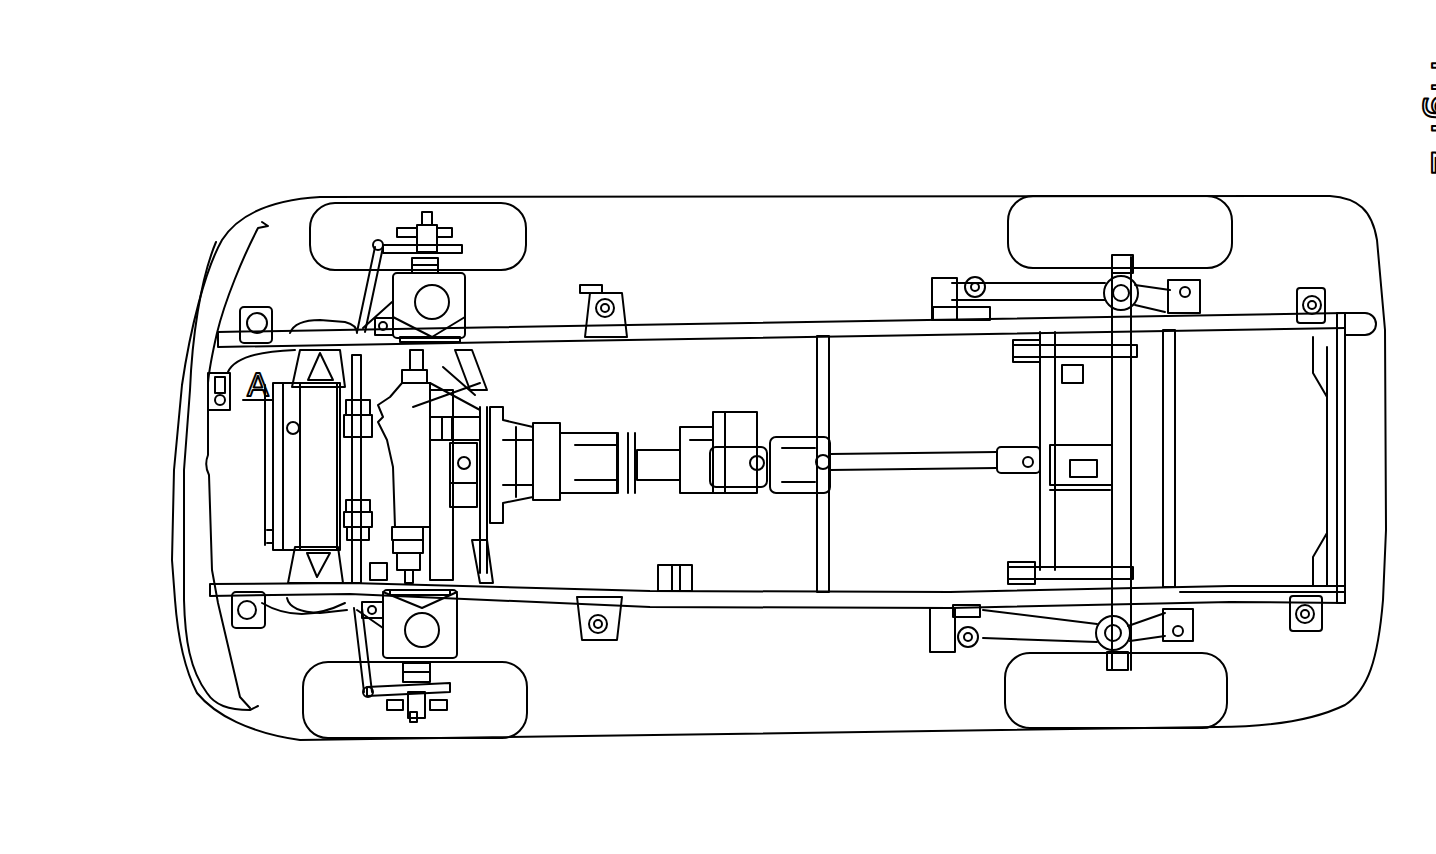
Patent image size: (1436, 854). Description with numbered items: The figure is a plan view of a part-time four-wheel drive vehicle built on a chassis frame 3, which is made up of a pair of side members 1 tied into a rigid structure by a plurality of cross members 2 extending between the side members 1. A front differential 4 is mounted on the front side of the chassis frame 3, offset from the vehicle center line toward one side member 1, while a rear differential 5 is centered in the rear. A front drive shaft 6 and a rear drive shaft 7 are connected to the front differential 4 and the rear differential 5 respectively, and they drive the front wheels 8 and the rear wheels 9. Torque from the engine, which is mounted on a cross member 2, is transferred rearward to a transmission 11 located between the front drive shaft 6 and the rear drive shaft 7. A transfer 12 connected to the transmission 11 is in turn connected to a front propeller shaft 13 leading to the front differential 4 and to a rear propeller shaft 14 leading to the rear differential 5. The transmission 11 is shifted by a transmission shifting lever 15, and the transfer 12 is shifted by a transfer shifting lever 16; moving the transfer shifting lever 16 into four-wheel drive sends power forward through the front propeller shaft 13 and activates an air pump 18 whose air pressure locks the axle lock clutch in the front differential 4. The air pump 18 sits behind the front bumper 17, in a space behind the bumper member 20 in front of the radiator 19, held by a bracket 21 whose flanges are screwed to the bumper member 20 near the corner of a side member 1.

The side member 1 is at (748, 322).
The cross member 2 is at (488, 555).
The chassis frame 3 is at (893, 606).
The front differential 4 is at (420, 410).
The rear differential 5 is at (1093, 443).
The front drive shaft 6 is at (455, 603).
The rear drive shaft 7 is at (1130, 535).
The front wheels 8 is at (503, 215).
The rear wheels 9 is at (1158, 213).
The transmission 11 is at (597, 490).
The transfer 12 is at (746, 418).
The front propeller shaft 13 is at (613, 423).
The rear propeller shaft 14 is at (963, 470).
The transmission shifting lever 15 is at (757, 473).
The transfer shifting lever 16 is at (833, 463).
The front bumper 17 is at (175, 532).
The air pump 18 is at (230, 418).
The radiator 19 is at (282, 503).
The bumper member 20 is at (178, 455).
The bracket 21 is at (208, 383).